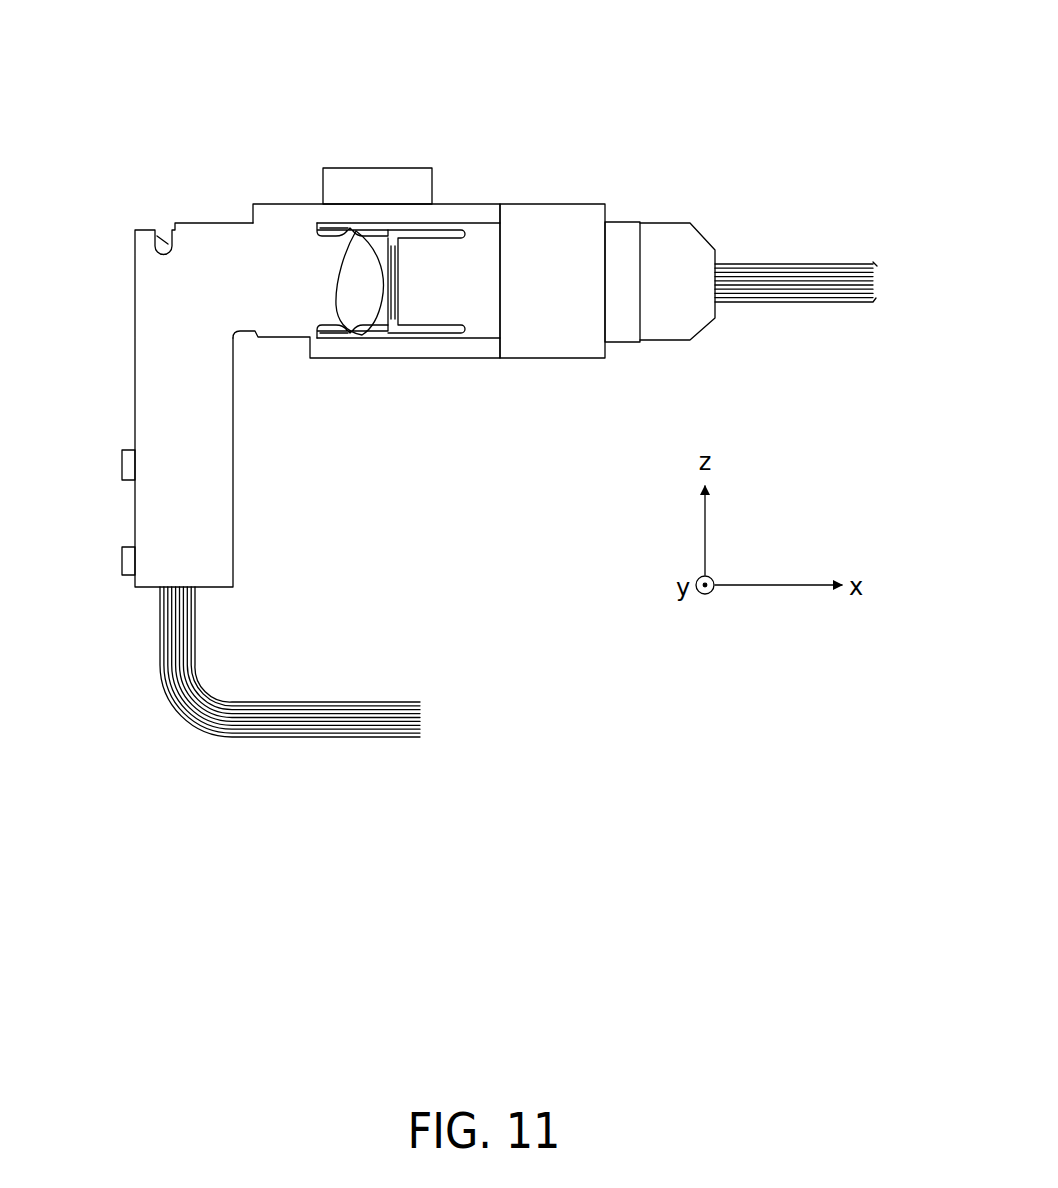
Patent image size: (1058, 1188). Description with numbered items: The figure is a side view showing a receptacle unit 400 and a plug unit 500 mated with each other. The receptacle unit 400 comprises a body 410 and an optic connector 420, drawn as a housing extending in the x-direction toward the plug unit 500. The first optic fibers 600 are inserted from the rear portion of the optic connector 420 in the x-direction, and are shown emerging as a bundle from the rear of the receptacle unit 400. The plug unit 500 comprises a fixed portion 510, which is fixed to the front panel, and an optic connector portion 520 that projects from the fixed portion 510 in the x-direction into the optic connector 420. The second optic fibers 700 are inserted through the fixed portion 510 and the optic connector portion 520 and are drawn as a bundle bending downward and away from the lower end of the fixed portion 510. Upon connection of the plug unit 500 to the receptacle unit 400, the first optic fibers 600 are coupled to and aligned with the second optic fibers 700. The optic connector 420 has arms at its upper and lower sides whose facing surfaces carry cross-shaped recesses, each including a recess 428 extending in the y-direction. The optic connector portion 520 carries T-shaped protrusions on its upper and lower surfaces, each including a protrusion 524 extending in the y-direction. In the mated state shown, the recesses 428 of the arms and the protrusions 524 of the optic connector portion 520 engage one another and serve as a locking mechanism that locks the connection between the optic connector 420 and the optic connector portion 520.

The receptacle unit 400 is at (526, 146).
The body 410 is at (567, 235).
The optic connector 420 is at (474, 258).
The recess 428 is at (363, 230).
The plug unit 500 is at (262, 487).
The fixed portion 510 is at (153, 387).
The optic connector portion 520 is at (268, 295).
The protrusion 524 is at (352, 330).
The first optic fibers 600 is at (787, 268).
The second optic fibers 700 is at (318, 700).